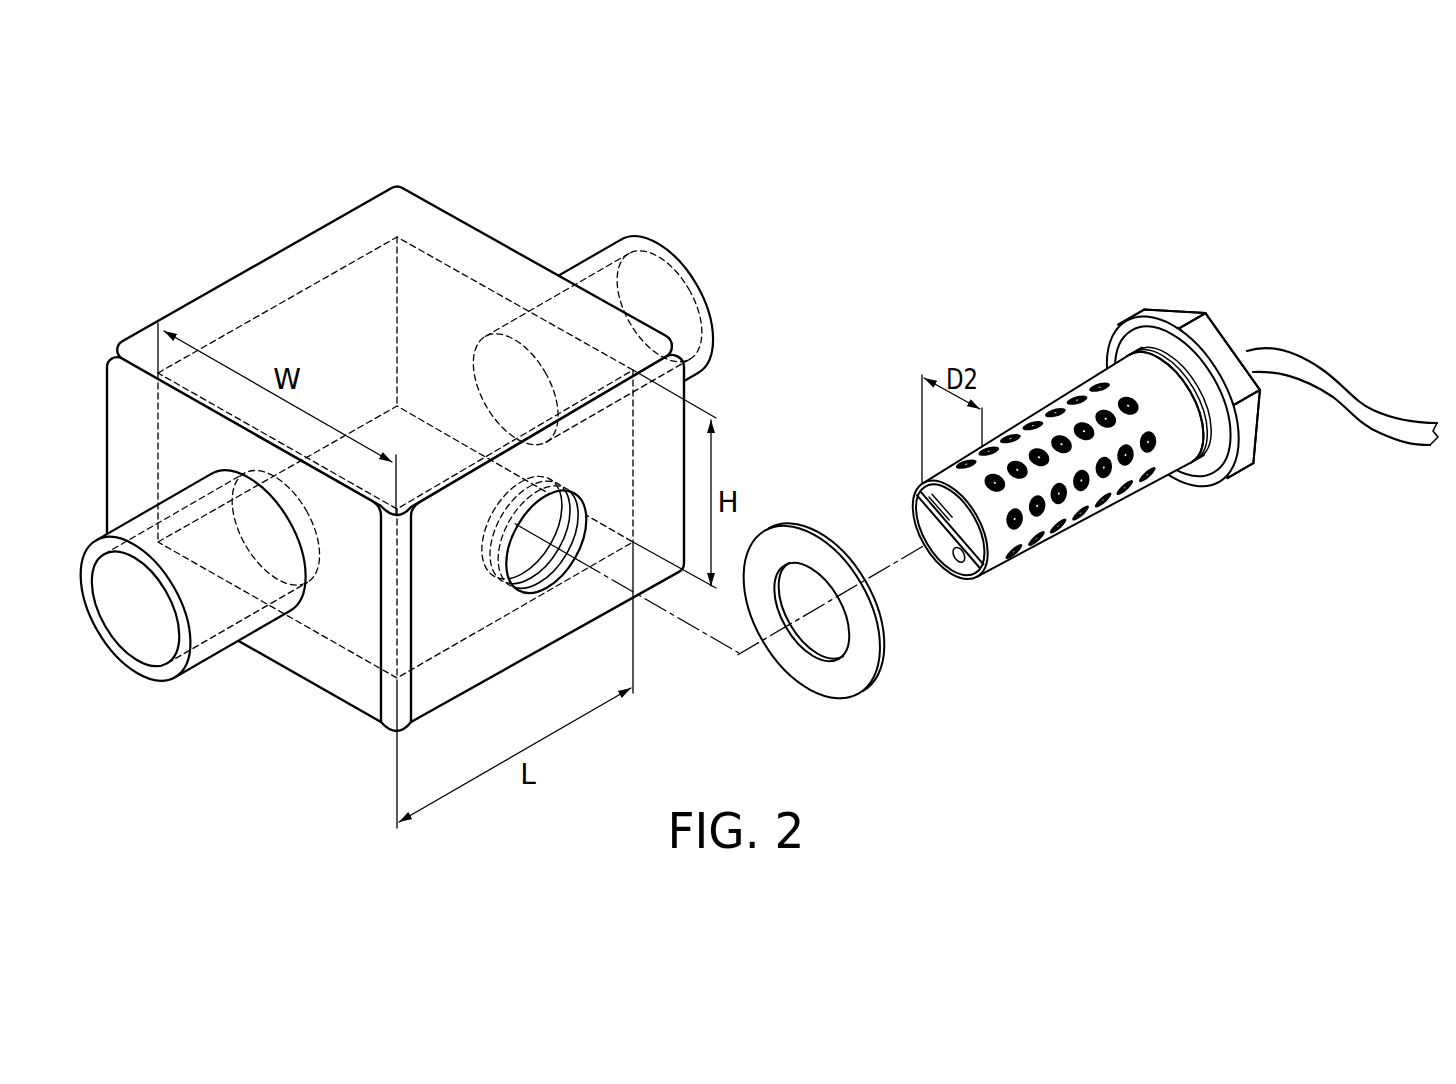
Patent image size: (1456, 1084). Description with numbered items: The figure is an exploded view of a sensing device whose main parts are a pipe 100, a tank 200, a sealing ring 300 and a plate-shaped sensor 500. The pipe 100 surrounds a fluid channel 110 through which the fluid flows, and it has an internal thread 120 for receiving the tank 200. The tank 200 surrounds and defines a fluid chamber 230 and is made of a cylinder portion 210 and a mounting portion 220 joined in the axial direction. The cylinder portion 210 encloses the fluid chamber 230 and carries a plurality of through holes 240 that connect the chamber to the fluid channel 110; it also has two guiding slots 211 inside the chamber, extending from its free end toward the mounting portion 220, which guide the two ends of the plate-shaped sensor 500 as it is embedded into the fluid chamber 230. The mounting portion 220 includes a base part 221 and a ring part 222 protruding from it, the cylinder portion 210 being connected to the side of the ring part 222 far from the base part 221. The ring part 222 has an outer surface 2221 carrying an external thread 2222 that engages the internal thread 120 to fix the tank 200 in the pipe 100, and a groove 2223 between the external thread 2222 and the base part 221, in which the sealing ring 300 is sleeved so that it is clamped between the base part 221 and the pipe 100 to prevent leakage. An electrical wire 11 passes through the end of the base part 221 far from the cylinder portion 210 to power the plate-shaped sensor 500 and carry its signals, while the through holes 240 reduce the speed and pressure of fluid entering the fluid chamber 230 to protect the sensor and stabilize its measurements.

The electrical wire 11 is at (1383, 423).
The pipe 100 is at (475, 255).
The fluid channel 110 is at (330, 333).
The internal thread 120 is at (536, 580).
The tank 200 is at (1132, 422).
The cylinder portion 210 is at (1009, 475).
The guiding slots 211 is at (940, 507).
The mounting portion 220 is at (1219, 380).
The base part 221 is at (1184, 375).
The ring part 222 is at (1159, 360).
The outer surface 2221 is at (1160, 408).
The external thread 2222 is at (1178, 322).
The groove 2223 is at (1204, 384).
The fluid chamber 230 is at (950, 530).
The through holes 240 is at (1062, 465).
The sealing ring 300 is at (823, 678).
The plate-shaped sensor 500 is at (959, 554).